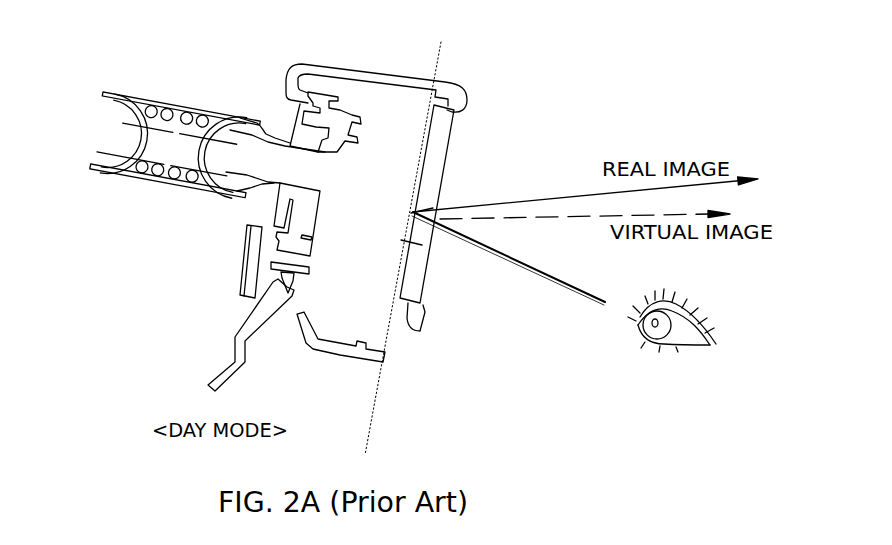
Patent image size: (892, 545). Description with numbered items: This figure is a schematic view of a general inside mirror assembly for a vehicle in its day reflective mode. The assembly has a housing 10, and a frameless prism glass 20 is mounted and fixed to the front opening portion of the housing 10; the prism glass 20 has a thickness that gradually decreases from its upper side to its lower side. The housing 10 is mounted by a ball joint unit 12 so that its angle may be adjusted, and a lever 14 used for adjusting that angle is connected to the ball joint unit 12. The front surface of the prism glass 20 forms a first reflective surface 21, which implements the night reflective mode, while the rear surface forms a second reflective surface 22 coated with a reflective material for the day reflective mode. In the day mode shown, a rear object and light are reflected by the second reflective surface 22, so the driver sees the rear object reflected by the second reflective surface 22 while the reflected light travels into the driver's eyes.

The housing 10 is at (246, 264).
The ball joint unit 12 is at (214, 190).
The lever 14 is at (252, 338).
The prism glass 20 is at (446, 144).
The first reflective surface 21 is at (435, 177).
The second reflective surface 22 is at (410, 240).